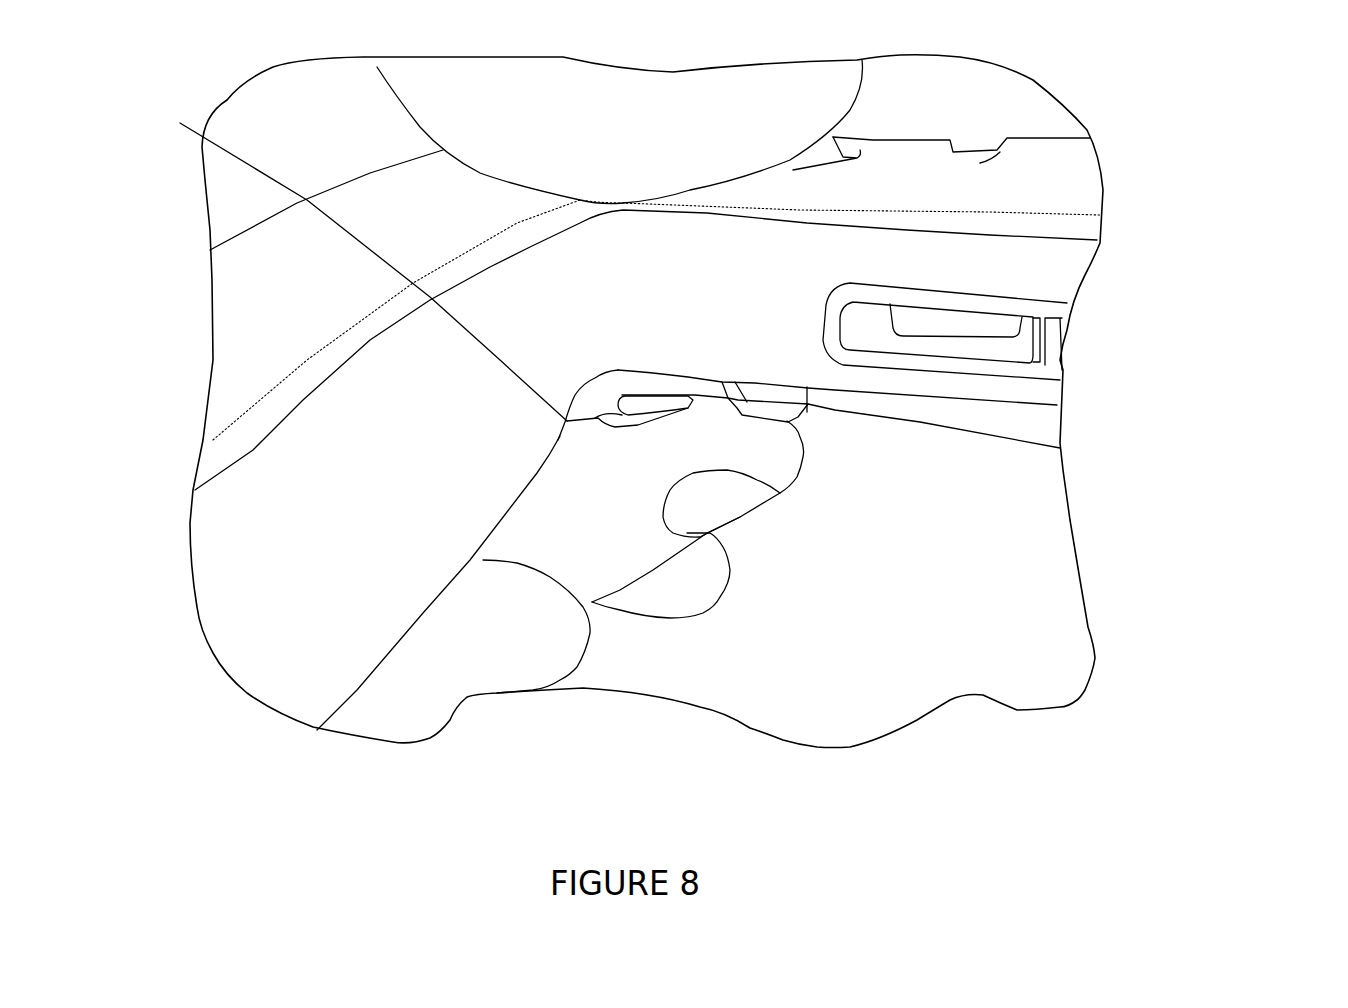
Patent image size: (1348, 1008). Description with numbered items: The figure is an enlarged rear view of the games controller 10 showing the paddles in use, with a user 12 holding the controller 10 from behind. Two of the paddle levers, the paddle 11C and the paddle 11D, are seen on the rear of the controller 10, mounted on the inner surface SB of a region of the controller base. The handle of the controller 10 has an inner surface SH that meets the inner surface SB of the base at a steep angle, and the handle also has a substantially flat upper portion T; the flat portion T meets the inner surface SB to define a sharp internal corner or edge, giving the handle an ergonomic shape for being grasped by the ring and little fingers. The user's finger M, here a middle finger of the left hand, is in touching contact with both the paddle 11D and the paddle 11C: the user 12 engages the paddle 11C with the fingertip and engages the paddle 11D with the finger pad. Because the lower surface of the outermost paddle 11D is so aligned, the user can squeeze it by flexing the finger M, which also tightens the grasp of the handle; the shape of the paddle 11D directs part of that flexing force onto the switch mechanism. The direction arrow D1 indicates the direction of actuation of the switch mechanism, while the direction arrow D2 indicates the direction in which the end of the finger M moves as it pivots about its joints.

The games controller 10 is at (1112, 257).
The paddle lever 11D is at (637, 400).
The flat upper portion T is at (360, 268).
The paddle lever 11C is at (800, 414).
The inner surface of the controller base SB is at (920, 408).
The inner surface of the handle SH is at (290, 637).
The user 12 is at (523, 653).
The finger M is at (637, 553).
The direction arrow D1 is at (693, 388).
The direction arrow D2 is at (678, 422).